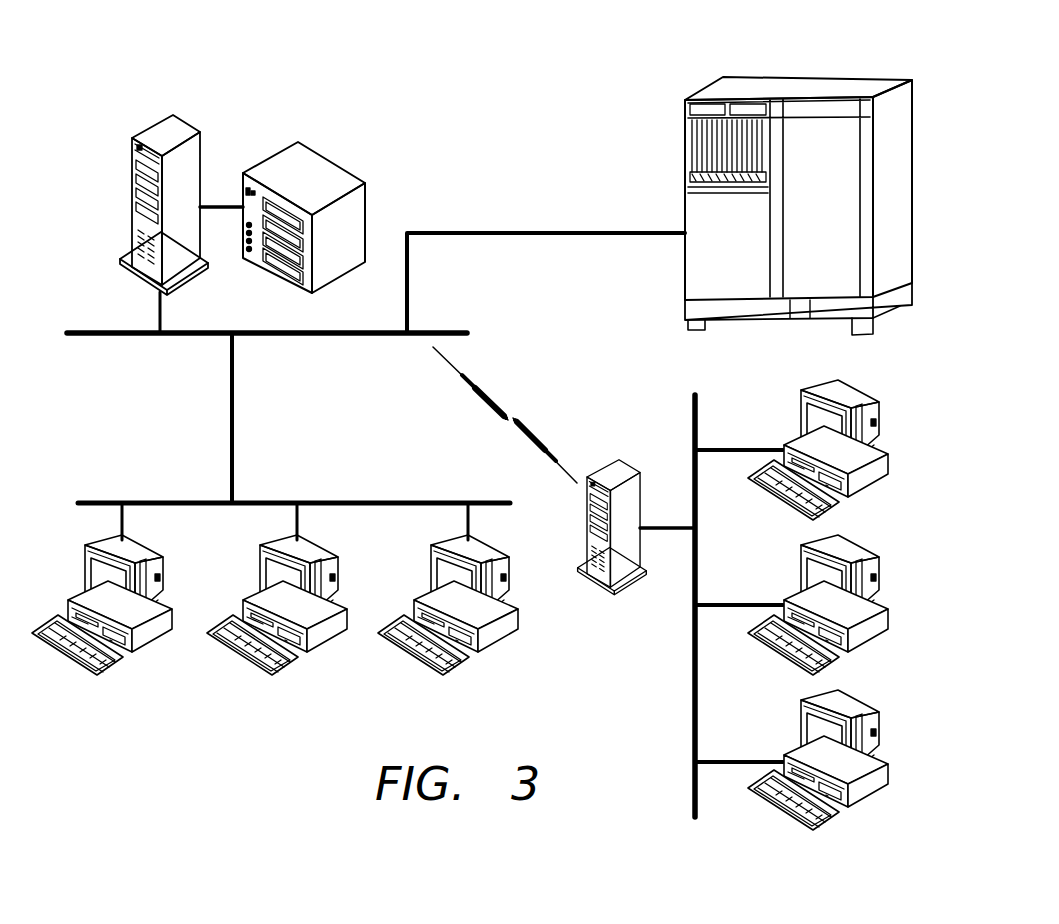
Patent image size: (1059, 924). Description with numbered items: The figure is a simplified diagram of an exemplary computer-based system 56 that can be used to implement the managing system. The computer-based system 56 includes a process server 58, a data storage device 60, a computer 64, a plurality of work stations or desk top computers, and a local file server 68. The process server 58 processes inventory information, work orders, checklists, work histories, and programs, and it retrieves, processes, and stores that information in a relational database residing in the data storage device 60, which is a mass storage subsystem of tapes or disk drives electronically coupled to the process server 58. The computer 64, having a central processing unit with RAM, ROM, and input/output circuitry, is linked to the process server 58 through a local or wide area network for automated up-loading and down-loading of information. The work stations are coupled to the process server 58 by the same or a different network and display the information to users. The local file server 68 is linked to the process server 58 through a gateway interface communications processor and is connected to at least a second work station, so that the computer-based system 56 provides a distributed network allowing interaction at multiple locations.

The computer-based system 56 is at (391, 106).
The process server 58 is at (158, 131).
The data storage device 60 is at (278, 165).
The computer 64 is at (805, 87).
The local file server 68 is at (623, 468).